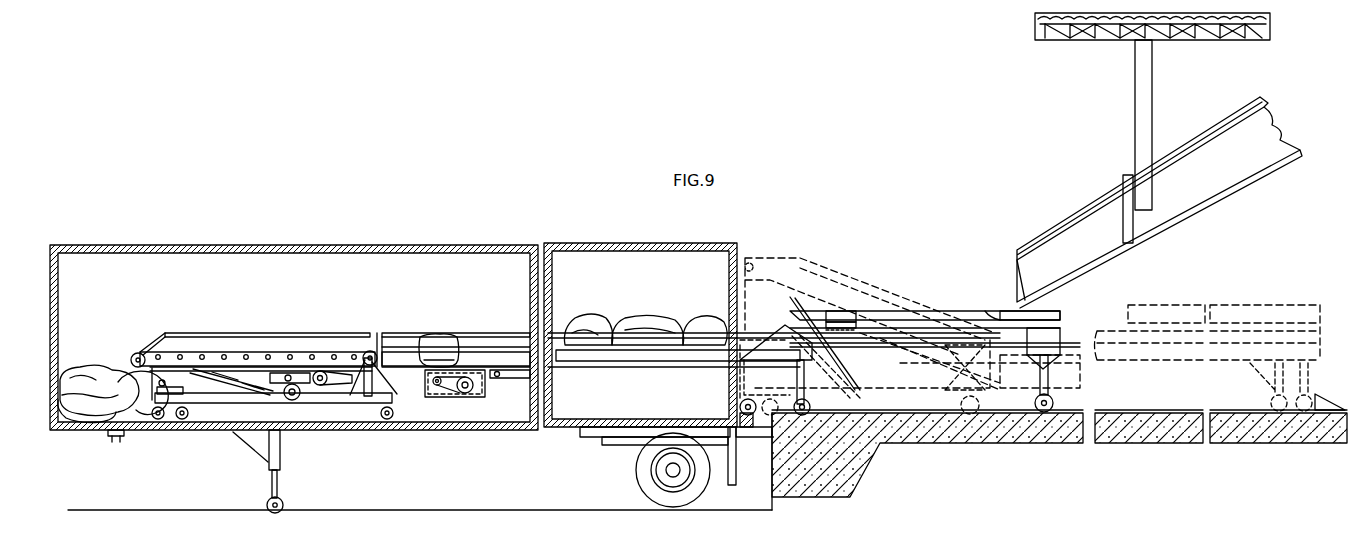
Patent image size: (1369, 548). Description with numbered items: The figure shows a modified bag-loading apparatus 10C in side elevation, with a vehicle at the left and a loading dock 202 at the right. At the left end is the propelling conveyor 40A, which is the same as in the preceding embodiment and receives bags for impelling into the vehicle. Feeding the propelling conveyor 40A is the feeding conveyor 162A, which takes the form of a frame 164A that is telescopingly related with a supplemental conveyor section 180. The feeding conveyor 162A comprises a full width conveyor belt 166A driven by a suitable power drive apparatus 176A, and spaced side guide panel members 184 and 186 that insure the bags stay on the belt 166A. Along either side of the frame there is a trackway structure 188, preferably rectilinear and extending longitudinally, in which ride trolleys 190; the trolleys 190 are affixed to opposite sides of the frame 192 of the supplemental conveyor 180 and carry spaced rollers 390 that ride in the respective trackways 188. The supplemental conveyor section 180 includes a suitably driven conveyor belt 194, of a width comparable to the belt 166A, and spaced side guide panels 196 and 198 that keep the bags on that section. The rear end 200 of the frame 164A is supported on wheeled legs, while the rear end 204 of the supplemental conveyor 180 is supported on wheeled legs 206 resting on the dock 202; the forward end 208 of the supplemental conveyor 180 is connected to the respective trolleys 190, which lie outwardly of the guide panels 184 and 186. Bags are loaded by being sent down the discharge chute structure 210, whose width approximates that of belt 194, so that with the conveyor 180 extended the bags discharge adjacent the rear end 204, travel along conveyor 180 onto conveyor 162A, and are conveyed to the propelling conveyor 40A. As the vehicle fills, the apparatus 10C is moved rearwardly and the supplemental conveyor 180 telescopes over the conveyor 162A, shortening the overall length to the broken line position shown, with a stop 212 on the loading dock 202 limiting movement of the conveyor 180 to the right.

The propelling conveyor 40A is at (302, 300).
The apparatus 10C is at (427, 274).
The frame 164A is at (508, 365).
The feeding conveyor 162A is at (604, 288).
The side guide panel member 184 is at (481, 340).
The full width conveyor belt 166A is at (471, 345).
The side guide panel member 186 is at (436, 345).
The trackway structure 188 is at (683, 362).
The power drive apparatus 176A is at (491, 398).
The trolley 190 is at (784, 330).
The forward end 208 is at (829, 322).
The conveyor belt 194 is at (842, 311).
The frame 192 is at (894, 340).
The supplemental conveyor section 180 is at (936, 298).
The side guide panel 196 is at (966, 311).
The side guide panel 198 is at (1001, 315).
The discharge chute structure 210 is at (1096, 166).
The rear end 204 is at (1061, 326).
The spaced rollers 390 is at (747, 386).
The loading dock 202 is at (1041, 460).
The rear end 200 is at (794, 300).
The wheeled legs 206 is at (1039, 386).
The stop 212 is at (1323, 418).